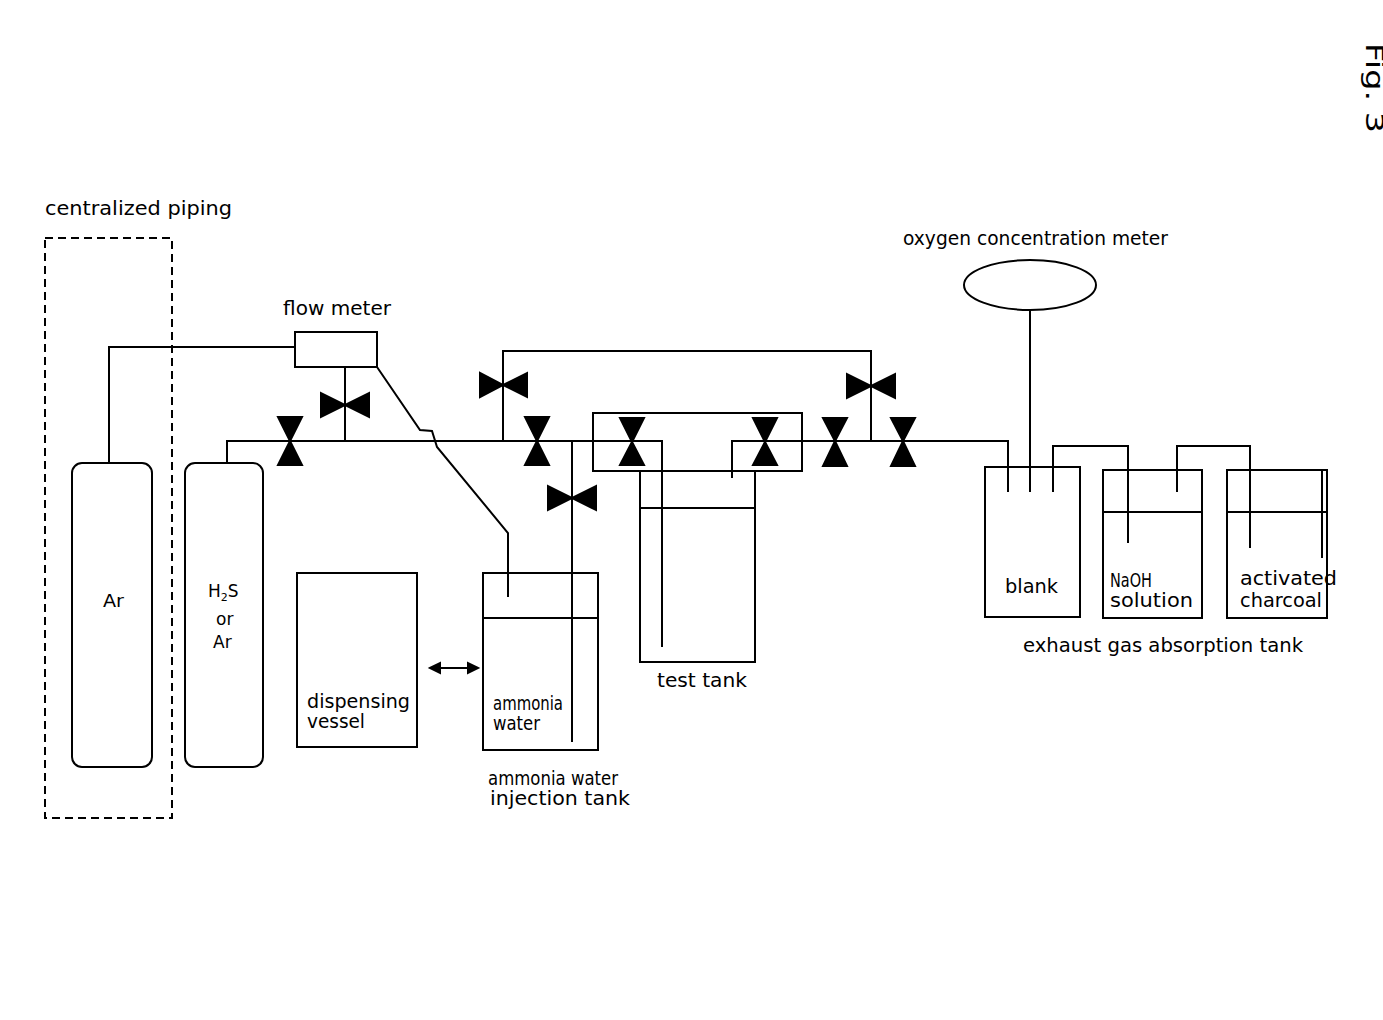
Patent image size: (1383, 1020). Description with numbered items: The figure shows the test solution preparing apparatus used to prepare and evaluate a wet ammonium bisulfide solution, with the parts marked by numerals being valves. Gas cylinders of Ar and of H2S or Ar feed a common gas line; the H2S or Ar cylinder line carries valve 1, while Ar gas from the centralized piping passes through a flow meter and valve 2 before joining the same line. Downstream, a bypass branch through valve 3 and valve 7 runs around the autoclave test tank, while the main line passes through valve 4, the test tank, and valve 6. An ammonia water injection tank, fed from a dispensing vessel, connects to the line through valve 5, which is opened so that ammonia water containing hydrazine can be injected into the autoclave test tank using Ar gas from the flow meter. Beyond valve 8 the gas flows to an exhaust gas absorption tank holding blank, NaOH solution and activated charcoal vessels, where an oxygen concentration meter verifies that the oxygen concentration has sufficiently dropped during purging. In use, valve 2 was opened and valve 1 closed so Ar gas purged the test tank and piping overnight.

The valve 1 is at (290, 457).
The valve 2 is at (356, 409).
The valve 3 is at (502, 372).
The valve 4 is at (546, 430).
The valve 5 is at (582, 499).
The valve 6 is at (835, 459).
The valve 7 is at (871, 374).
The valve 8 is at (903, 459).